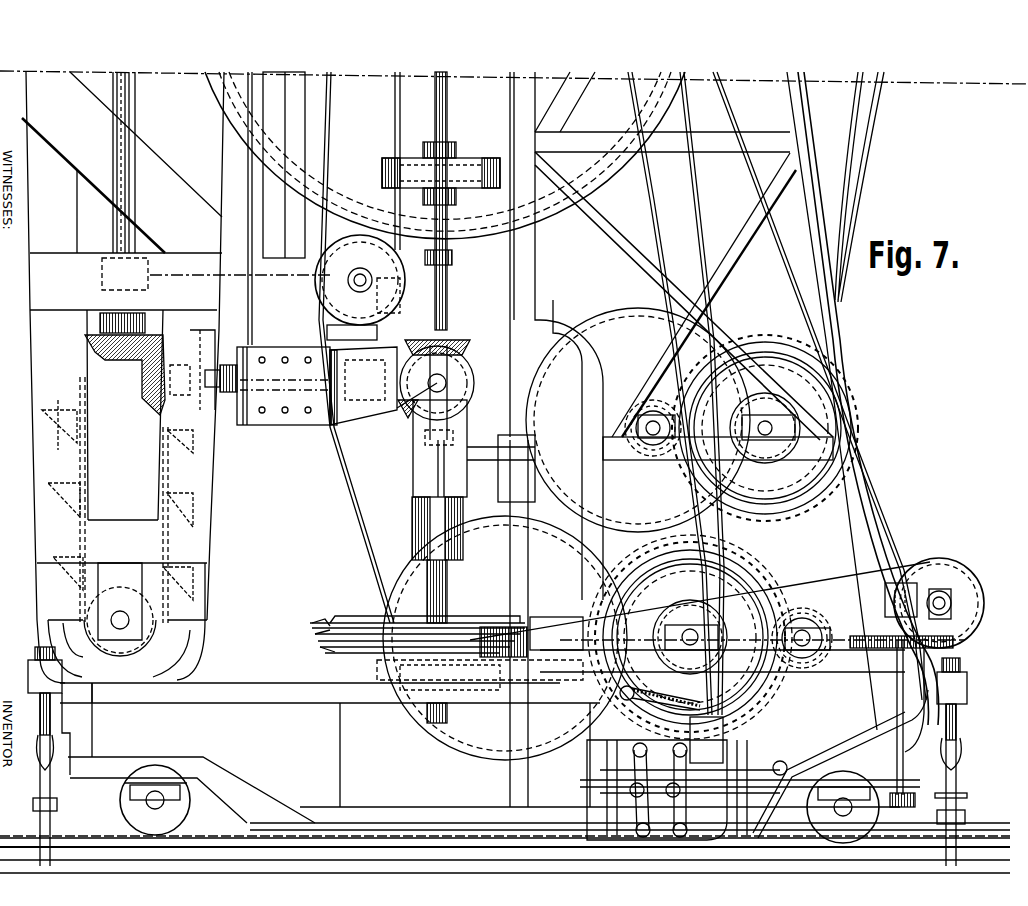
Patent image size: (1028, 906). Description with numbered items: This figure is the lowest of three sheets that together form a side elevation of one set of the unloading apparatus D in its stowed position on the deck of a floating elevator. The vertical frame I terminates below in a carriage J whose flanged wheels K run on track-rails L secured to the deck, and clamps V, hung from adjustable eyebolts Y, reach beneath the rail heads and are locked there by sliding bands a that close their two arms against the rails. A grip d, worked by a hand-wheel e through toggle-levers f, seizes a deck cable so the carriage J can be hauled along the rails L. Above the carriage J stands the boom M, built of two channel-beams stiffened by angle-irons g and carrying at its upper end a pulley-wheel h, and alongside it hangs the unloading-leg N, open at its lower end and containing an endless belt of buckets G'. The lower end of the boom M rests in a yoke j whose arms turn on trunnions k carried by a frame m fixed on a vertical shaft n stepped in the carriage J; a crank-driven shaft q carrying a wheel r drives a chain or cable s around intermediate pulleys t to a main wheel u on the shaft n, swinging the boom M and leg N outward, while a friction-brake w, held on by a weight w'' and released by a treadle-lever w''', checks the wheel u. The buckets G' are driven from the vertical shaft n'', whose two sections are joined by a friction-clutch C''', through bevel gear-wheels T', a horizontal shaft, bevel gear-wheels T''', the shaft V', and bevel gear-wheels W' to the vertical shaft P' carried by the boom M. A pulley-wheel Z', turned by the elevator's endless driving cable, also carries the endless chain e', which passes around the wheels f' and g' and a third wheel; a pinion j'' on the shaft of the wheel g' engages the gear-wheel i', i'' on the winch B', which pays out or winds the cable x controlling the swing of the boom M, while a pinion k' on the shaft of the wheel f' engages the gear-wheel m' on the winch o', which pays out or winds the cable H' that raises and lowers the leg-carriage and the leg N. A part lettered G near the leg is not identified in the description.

The unloading-leg N is at (215, 535).
The vertical shaft P' is at (136, 162).
The angle-irons g is at (284, 165).
The boom M is at (262, 268).
The flanged wheels K is at (105, 812).
The vertical shaft n'' is at (436, 201).
The friction-clutch C''' is at (441, 186).
The pulley-wheel Z' is at (445, 162).
The cable or chain e' is at (622, 386).
The cable H' is at (670, 393).
The cable x is at (702, 206).
The unloading apparatus D is at (863, 401).
The vertical frame I is at (790, 172).
The bevel gear-wheels W' is at (125, 364).
The shaft V' is at (221, 402).
The yoke j is at (350, 400).
The bevel gear-wheels T' is at (447, 376).
The bevel gear-wheels T''' is at (398, 414).
The trunnions k is at (401, 431).
The frame m is at (417, 480).
The endless belt of buckets G' is at (102, 538).
The guide housing G is at (102, 632).
The carriage J is at (236, 698).
The adjustable eyebolts Y is at (40, 692).
The clamps V is at (496, 836).
The sliding bands a is at (978, 804).
The track-rails L is at (222, 806).
The intermediate pulleys t is at (325, 621).
The main wheel u is at (370, 620).
The vertical shaft n is at (426, 641).
The friction-brake w is at (442, 696).
The pulley-wheel h is at (530, 623).
The wheel g' is at (718, 466).
The pinion-wheel j'' is at (653, 415).
The gear-wheel i' is at (778, 428).
The gear-wheel i'' is at (765, 410).
The winch B' is at (810, 413).
The wheel f' is at (702, 631).
The winch o' is at (699, 637).
The cable or chain s is at (700, 601).
The pinion-wheel k' is at (805, 632).
The wheel r is at (974, 646).
The shaft q is at (950, 592).
The hand-wheels e is at (892, 668).
The gear-wheel m' is at (705, 724).
The weight w'' is at (666, 715).
The treadle-lever w''' is at (873, 764).
The grip d is at (620, 782).
The toggle-levers f is at (656, 807).